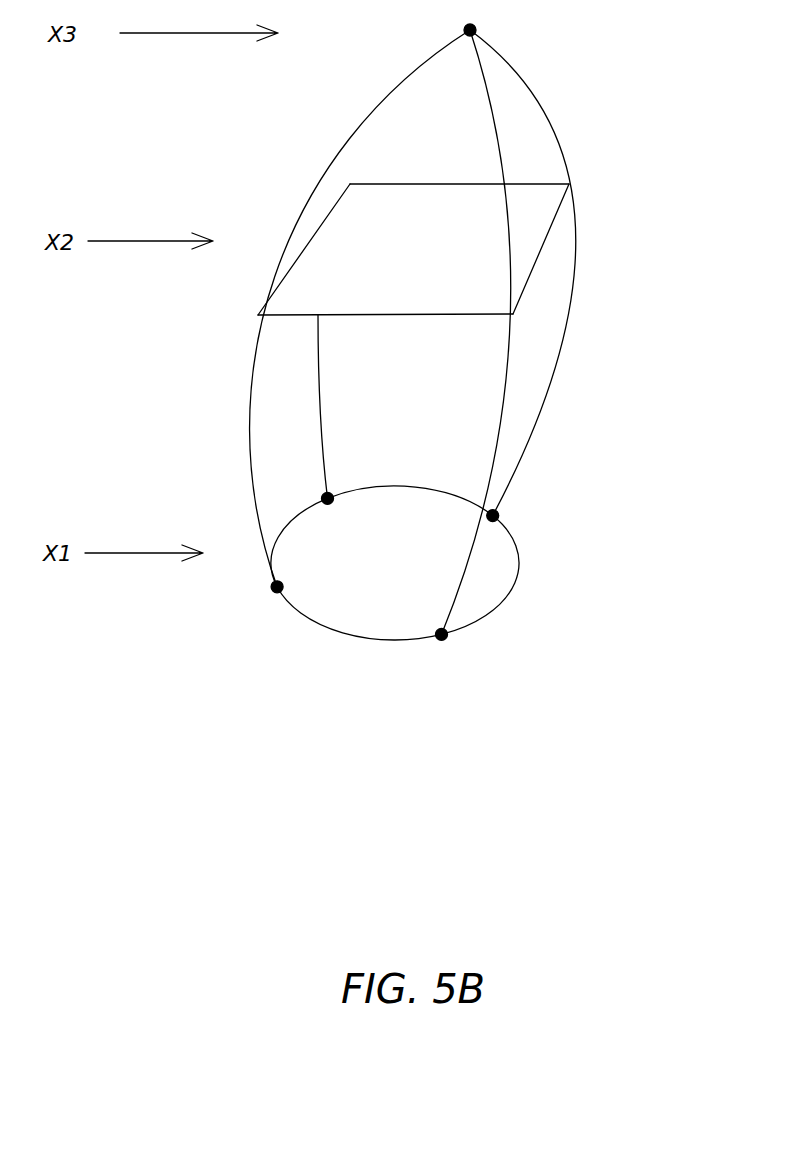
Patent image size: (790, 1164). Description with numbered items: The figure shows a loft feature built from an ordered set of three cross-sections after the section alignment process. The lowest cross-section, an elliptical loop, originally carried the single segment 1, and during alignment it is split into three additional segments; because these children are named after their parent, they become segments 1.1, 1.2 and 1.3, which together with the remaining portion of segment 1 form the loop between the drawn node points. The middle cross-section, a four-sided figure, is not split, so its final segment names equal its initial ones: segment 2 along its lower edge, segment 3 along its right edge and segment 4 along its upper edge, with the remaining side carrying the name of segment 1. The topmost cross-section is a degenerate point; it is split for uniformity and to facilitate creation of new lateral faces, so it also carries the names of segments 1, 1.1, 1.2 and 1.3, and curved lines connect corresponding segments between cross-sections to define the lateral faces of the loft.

The segment 1 is at (462, 307).
The child segment 1.1 is at (394, 352).
The child segment 1.2 is at (501, 575).
The child segment 1.3 is at (447, 276).
The segment 2 is at (385, 335).
The segment 3 is at (541, 249).
The segment 4 is at (413, 235).